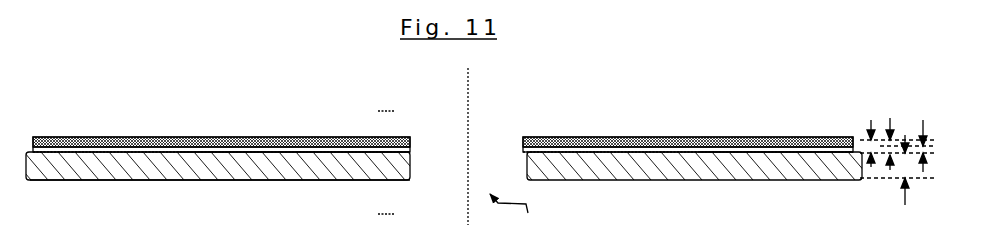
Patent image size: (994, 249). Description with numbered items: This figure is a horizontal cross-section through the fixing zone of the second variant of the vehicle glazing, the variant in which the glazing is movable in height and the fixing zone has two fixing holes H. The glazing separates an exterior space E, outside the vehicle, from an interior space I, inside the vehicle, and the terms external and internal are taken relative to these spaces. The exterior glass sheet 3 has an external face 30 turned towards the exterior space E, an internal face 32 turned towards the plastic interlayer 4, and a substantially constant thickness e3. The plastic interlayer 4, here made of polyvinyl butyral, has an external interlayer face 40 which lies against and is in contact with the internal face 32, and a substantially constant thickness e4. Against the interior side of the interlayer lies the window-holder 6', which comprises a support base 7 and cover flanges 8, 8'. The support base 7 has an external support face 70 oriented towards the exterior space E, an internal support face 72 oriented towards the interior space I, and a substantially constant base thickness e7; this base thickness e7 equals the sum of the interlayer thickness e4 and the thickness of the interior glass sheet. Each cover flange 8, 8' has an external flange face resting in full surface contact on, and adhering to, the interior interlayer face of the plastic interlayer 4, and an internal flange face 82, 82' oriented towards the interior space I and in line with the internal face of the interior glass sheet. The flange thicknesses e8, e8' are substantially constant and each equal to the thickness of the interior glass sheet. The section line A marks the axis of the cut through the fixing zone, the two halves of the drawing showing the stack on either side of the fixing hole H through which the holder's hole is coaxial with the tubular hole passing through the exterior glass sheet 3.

The plastic interlayer 4 is at (64, 143).
The support base 7 is at (283, 143).
The internal flange face 82 is at (221, 117).
The cover flange 8 is at (221, 126).
The window-holder 6' is at (214, 146).
The exterior glass sheet 3 is at (70, 172).
The external face 30 is at (97, 180).
The internal face 32 is at (214, 166).
The external interlayer face 40 is at (214, 166).
The interior space I is at (386, 100).
The exterior space E is at (386, 203).
The axis A is at (468, 96).
The fixing hole H is at (512, 213).
The internal support face 72 is at (548, 141).
The external support face 70 is at (580, 153).
The cover flange 8' is at (688, 115).
The internal flange face 82' is at (688, 120).
The flange thickness e8 is at (871, 143).
The flange thickness e8' is at (871, 143).
The base thickness e7 is at (890, 122).
The thickness e3 is at (902, 170).
The thickness e4 is at (922, 165).